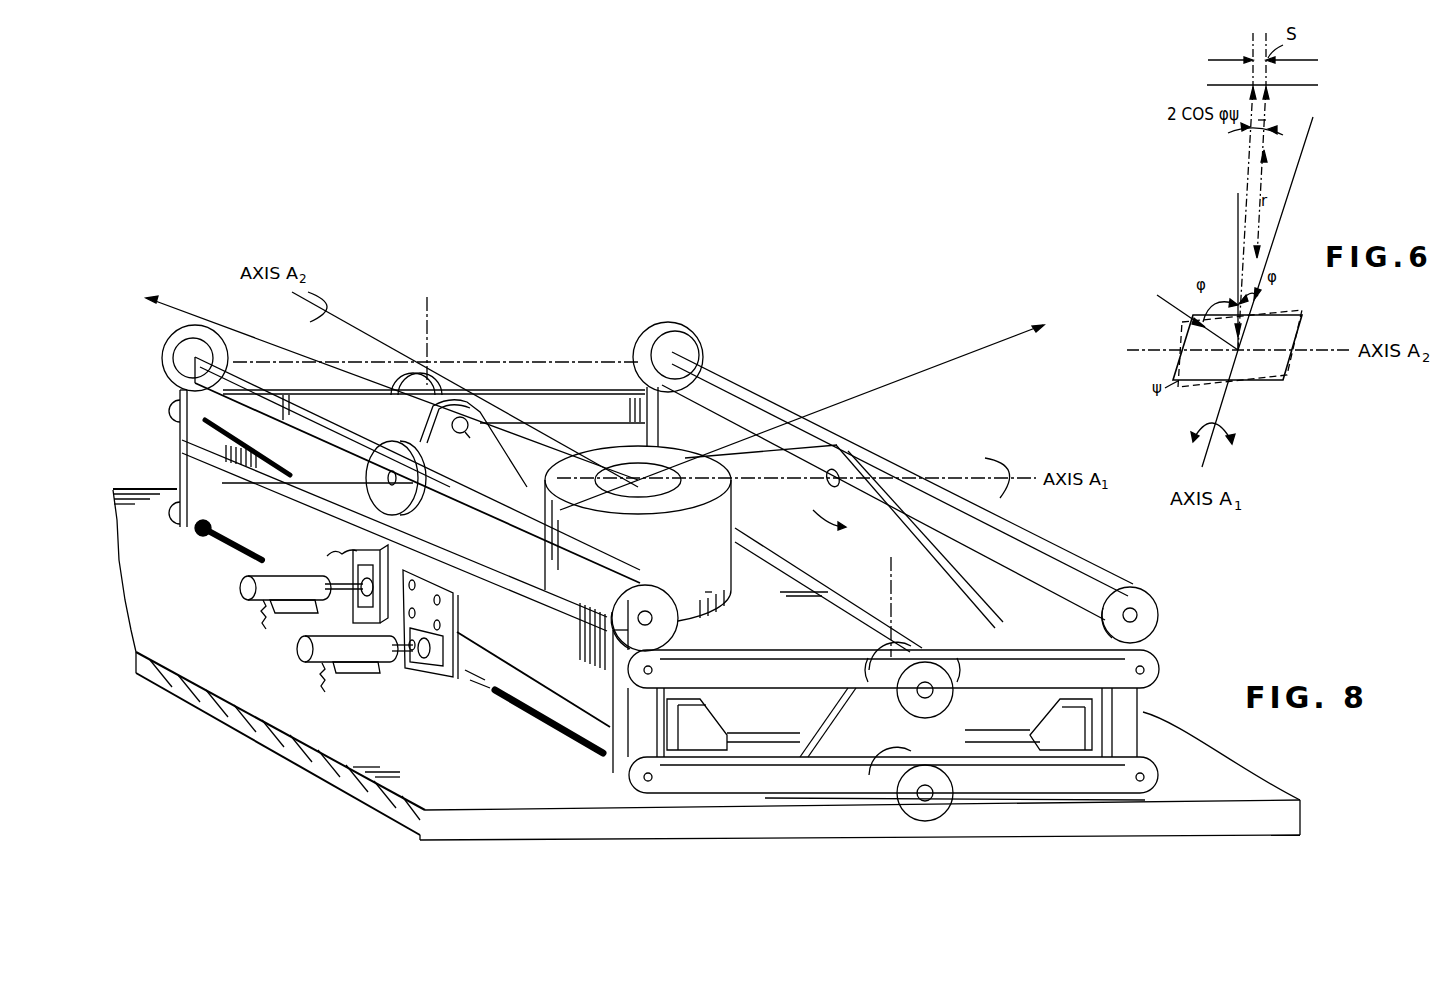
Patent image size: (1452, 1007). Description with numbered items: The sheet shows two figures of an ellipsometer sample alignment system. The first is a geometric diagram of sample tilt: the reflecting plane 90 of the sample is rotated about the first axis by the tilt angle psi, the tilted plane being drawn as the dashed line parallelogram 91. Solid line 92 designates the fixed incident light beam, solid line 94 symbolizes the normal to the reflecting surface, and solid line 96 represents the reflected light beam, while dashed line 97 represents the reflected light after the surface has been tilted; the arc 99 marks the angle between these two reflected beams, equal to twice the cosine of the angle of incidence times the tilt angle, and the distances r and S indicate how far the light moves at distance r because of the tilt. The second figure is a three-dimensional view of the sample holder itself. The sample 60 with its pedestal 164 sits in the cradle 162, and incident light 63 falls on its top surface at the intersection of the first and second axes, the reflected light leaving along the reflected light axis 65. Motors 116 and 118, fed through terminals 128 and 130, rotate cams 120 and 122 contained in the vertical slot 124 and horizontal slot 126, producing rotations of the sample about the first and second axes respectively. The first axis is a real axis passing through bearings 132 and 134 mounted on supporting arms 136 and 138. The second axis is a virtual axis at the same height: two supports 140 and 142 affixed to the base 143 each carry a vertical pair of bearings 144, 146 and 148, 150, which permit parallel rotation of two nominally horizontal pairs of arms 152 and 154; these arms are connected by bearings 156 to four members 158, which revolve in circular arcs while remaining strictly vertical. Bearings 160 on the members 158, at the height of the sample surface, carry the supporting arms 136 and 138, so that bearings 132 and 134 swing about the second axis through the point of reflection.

In FIG. 8, the sample 60 is at (640, 490).
In FIG. 8, the incident light 63 is at (177, 307).
In FIG. 8, the reflected light axis 65 is at (948, 362).
In FIG. 6, the reflecting plane 90 is at (1300, 334).
In FIG. 6, the dashed line parallelogram 91 is at (1262, 312).
In FIG. 6, the incident light beam 92 is at (1183, 317).
In FIG. 6, the normal 94 is at (1238, 240).
In FIG. 6, the reflected light beam 96 is at (1264, 150).
In FIG. 6, the reflected light 97 is at (1250, 150).
In FIG. 6, the arc 99 is at (1262, 120).
In FIG. 8, the motor 116 is at (245, 590).
In FIG. 8, the motor 118 is at (305, 652).
In FIG. 8, the cam 120 is at (367, 600).
In FIG. 8, the cam 122 is at (424, 658).
In FIG. 8, the vertical slot 124 is at (348, 579).
In FIG. 8, the horizontal slot 126 is at (450, 631).
In FIG. 8, the terminal 128 is at (263, 622).
In FIG. 8, the terminal 130 is at (322, 690).
In FIG. 8, the bearing 132 is at (418, 500).
In FIG. 8, the bearing 134 is at (838, 487).
In FIG. 8, the supporting arm 136 is at (350, 452).
In FIG. 8, the supporting arm 138 is at (958, 522).
In FIG. 8, the support 140 is at (860, 749).
In FIG. 8, the support 142 is at (473, 427).
In FIG. 8, the base 143 is at (459, 769).
In FIG. 8, the bearing 144 is at (948, 697).
In FIG. 8, the bearing 146 is at (945, 803).
In FIG. 8, the bearing 148 is at (469, 440).
In FIG. 8, the bearing 150 is at (367, 383).
In FIG. 8, the arms 152 is at (1143, 710).
In FIG. 8, the arms 154 is at (172, 500).
In FIG. 8, the bearing 156 is at (653, 671).
In FIG. 8, the member 158 is at (182, 513).
In FIG. 8, the bearing 160 is at (172, 350).
In FIG. 8, the cradle 162 is at (870, 569).
In FIG. 8, the pedestal 164 is at (707, 592).